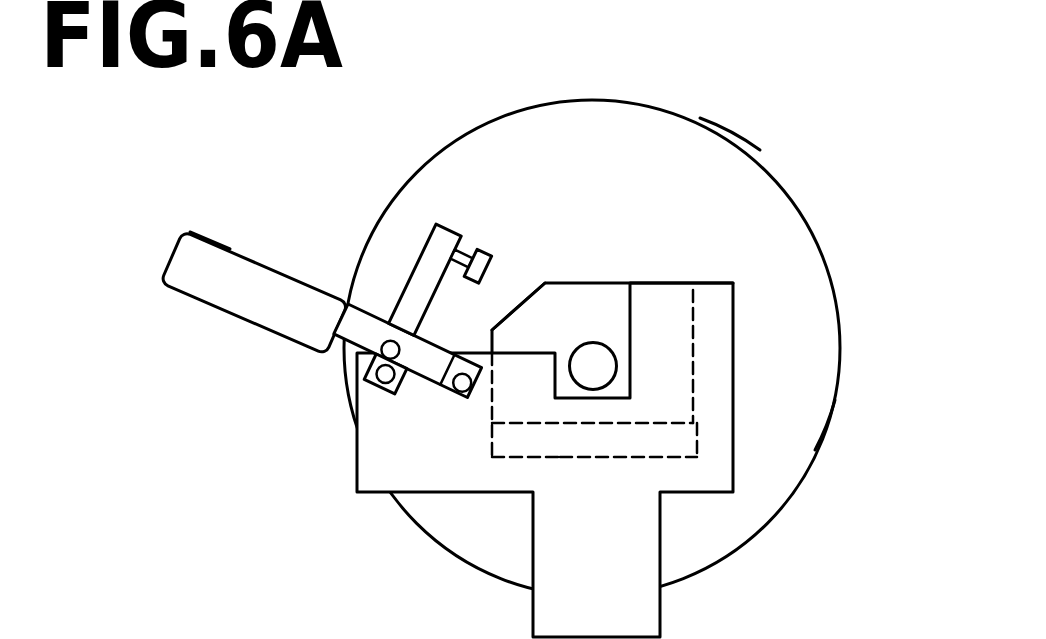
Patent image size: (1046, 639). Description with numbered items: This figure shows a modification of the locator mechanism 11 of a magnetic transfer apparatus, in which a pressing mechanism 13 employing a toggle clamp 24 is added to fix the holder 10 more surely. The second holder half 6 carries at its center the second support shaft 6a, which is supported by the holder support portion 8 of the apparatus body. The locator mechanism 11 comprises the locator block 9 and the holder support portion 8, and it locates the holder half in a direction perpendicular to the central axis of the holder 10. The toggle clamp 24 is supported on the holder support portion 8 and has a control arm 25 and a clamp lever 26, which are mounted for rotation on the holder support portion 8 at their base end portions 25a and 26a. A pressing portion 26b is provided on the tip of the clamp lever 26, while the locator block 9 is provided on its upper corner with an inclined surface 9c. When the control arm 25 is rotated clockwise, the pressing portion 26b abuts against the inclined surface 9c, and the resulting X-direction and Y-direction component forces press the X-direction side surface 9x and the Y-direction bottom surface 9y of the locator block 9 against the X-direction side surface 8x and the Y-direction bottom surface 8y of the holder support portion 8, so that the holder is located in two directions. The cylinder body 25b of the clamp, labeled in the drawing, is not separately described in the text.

The second holder half 6 is at (561, 113).
The second support shaft 6a is at (616, 362).
The holder support portion 8 is at (713, 495).
The X-direction side surface 8x is at (693, 331).
The Y-direction bottom surface 8y is at (583, 458).
The locator block 9 is at (613, 282).
The inclined surface 9c is at (522, 300).
The X-direction side surface 9x is at (695, 290).
The Y-direction bottom surface 9y is at (537, 458).
The holder 10 is at (724, 130).
The locator mechanism 11 is at (764, 413).
The pressing mechanism 13 is at (328, 287).
The toggle clamp 24 is at (230, 327).
The control arm 25 is at (340, 348).
The base end portion 25a is at (459, 393).
The cylinder 25b is at (204, 238).
The clamp lever 26 is at (418, 274).
The base end portion 26a is at (372, 395).
The pressing portion 26b is at (485, 249).